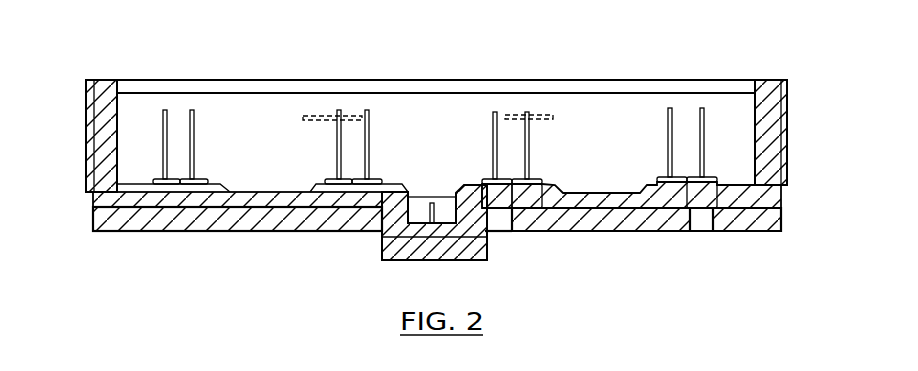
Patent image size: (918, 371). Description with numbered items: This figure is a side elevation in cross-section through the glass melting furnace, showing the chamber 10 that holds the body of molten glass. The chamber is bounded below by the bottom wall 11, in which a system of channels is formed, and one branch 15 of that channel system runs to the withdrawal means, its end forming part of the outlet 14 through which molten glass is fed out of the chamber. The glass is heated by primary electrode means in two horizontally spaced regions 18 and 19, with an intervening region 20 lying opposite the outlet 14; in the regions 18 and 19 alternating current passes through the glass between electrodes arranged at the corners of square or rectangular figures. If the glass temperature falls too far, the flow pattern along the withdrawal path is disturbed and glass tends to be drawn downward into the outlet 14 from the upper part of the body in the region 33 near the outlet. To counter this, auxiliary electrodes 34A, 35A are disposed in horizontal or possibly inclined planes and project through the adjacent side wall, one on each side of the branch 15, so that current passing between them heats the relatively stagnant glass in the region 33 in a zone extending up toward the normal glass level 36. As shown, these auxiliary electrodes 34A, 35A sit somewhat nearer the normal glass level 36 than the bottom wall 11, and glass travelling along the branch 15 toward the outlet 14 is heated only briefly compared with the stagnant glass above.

The chamber 10 is at (466, 91).
The bottom wall 11 is at (594, 223).
The outlet 14 is at (445, 213).
The branch of channel system 15 is at (435, 199).
The heating region 18 is at (310, 79).
The heating region 19 is at (637, 79).
The intervening region 20 is at (436, 79).
The region near outlet 33 is at (427, 133).
The auxiliary electrode 34A is at (360, 114).
The auxiliary electrode 35A is at (553, 114).
The normal glass level 36 is at (520, 92).